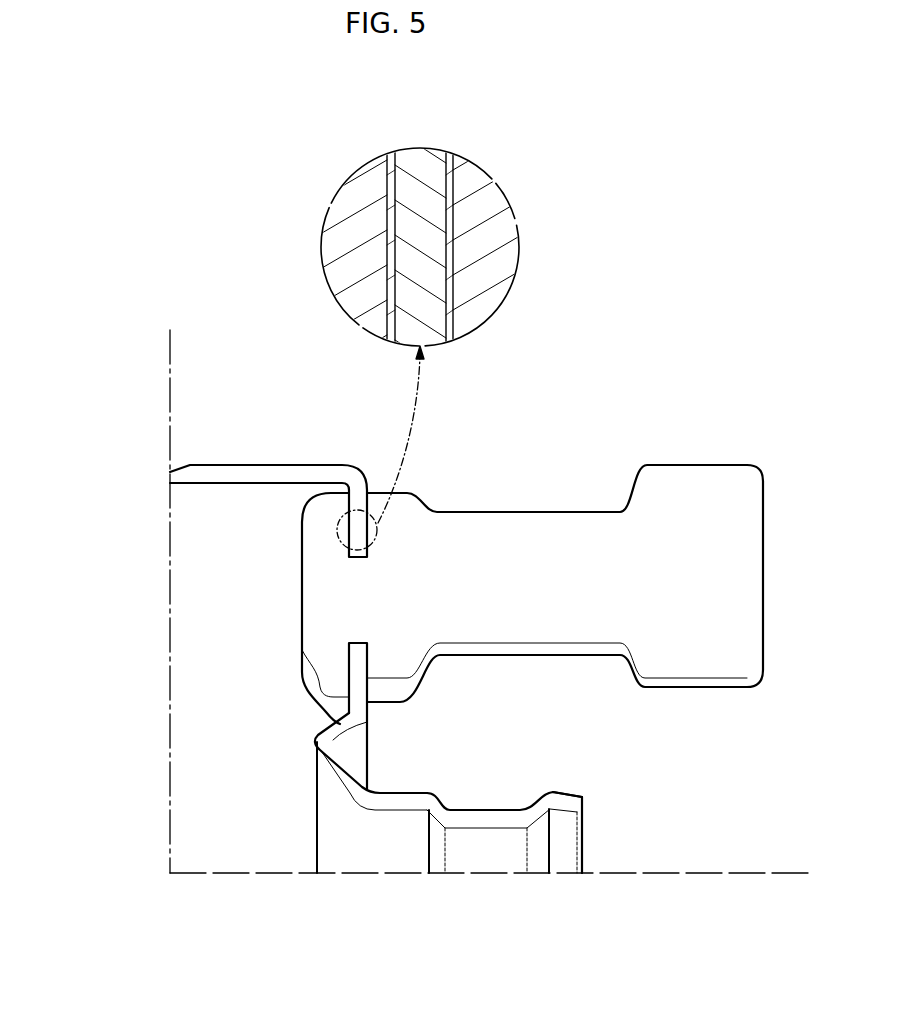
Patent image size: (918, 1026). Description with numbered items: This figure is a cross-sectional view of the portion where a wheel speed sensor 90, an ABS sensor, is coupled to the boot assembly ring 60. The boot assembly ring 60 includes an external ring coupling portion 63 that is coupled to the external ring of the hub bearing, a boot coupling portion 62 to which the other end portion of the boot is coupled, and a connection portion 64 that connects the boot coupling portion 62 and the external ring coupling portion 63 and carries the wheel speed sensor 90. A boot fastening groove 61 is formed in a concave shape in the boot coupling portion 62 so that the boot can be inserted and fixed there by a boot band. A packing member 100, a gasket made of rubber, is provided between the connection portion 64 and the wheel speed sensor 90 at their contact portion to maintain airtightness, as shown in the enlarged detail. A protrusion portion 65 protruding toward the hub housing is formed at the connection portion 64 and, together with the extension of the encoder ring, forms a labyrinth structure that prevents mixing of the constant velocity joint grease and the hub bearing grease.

The boot assembly ring 60 is at (418, 165).
The boot fastening groove 61 is at (487, 810).
The boot coupling portion 62 is at (563, 800).
The external ring coupling portion 63 is at (262, 463).
The connection portion 64 is at (362, 653).
The protrusion portion 65 is at (325, 752).
The wheel speed sensor 90 is at (740, 575).
The packing member 100 is at (387, 206).